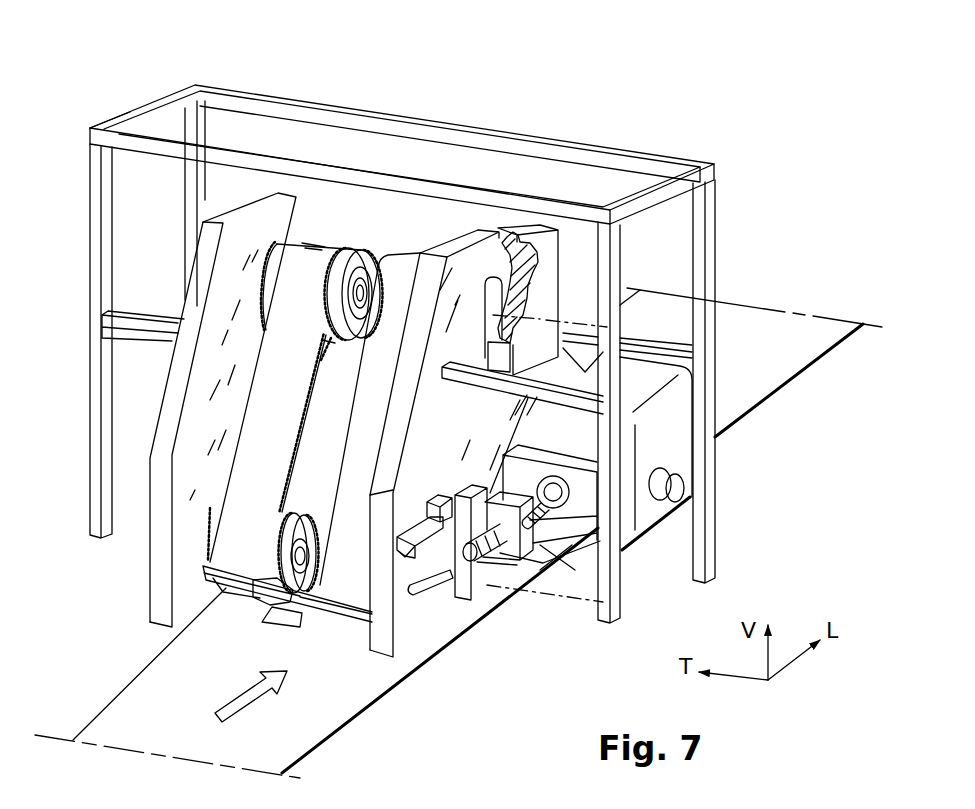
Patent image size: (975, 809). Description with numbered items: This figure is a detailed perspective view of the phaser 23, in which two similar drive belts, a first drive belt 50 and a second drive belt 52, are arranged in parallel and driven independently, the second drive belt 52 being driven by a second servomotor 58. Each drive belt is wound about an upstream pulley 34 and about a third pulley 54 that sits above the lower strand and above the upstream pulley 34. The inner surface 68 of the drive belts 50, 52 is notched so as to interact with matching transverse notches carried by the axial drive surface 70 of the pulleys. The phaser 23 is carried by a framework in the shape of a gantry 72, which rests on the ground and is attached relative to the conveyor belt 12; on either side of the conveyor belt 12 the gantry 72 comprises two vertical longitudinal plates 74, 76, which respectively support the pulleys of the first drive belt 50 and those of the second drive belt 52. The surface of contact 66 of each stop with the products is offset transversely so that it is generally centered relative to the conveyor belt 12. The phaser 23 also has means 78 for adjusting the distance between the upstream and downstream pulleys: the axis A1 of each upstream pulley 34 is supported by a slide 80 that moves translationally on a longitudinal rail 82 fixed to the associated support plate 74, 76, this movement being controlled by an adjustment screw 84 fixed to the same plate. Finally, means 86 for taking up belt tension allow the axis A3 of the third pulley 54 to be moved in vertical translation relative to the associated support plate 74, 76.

The conveyor belt 12 is at (458, 533).
The phaser 23 is at (402, 332).
The gantry 72 is at (104, 96).
The vertical longitudinal plate 74 is at (170, 410).
The vertical longitudinal plate 76 is at (486, 477).
The first drive belt 50 is at (344, 379).
The second drive belt 52 is at (403, 333).
The third pulley 54 is at (367, 239).
The inner surface 68 is at (269, 448).
The axial drive surface 70 is at (302, 344).
The upstream pulley 34 is at (328, 507).
The surface of contact 66 is at (270, 603).
The longitudinal rail 82 is at (425, 515).
The adjustment screw 84 is at (503, 583).
The slide 80 is at (526, 577).
The means for the adjustment of the distance 78 is at (577, 565).
The means for taking up the tension 86 is at (584, 300).
The second servomotor 58 is at (715, 453).
The axis of the upstream pulley A1 is at (545, 627).
The axis of the third pulley A3 is at (586, 320).